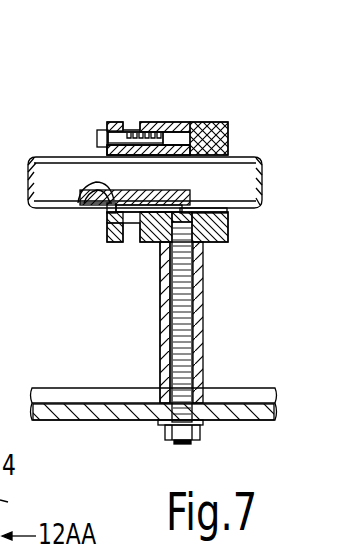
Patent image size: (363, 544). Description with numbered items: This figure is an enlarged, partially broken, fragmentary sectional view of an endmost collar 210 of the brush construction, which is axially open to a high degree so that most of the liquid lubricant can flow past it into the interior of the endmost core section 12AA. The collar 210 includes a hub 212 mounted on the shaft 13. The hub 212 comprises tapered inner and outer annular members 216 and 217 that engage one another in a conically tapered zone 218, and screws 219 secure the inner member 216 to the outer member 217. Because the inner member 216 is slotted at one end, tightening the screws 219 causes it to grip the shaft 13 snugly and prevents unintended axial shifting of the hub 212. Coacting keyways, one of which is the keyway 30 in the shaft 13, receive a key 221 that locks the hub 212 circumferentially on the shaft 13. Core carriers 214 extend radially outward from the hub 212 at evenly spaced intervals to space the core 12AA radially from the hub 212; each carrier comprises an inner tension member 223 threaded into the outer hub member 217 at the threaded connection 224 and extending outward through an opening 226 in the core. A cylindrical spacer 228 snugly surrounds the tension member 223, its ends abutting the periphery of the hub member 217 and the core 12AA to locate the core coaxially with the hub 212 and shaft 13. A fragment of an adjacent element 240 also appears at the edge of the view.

The shaft 13 is at (243, 172).
The hub 212 is at (147, 102).
The outer annular member 217 is at (222, 124).
The conically tapered zone 218 is at (189, 146).
The screws 219 is at (100, 130).
The inner annular member 216 is at (104, 152).
The collar 210 is at (243, 243).
The keyway 30 is at (88, 205).
The key 221 is at (80, 208).
The threaded connection 224 is at (194, 236).
The core carriers 214 is at (210, 272).
The cylindrical spacers 228 is at (165, 318).
The inner tension member 223 is at (186, 353).
The endmost core section 12AA is at (240, 420).
The opening 226 is at (163, 424).
The element 240 is at (26, 504).